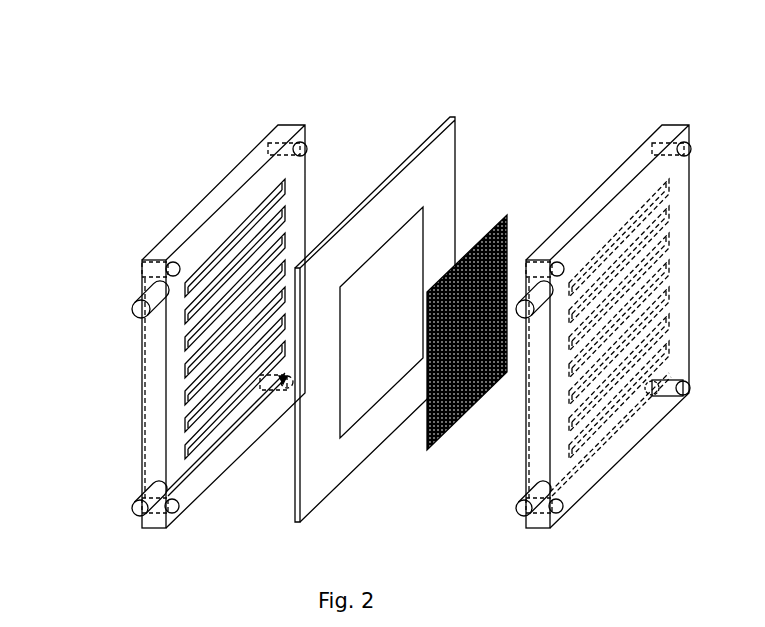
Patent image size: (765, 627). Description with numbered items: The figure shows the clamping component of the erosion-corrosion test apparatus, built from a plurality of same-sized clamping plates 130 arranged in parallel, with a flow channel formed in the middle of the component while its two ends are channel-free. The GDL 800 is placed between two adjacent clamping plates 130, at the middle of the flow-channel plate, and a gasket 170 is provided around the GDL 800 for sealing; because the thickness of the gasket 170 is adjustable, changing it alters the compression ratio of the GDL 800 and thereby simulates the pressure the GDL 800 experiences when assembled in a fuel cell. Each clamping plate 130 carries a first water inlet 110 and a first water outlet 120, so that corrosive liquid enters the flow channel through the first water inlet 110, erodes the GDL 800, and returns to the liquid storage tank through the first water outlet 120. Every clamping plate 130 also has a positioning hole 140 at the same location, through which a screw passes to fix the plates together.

The positioning hole 140 is at (305, 137).
The first water outlet 120 is at (153, 298).
The first water inlet 110 is at (145, 497).
The clamping plate 130 is at (247, 408).
The gasket 170 is at (437, 157).
The GDL 800 is at (508, 248).